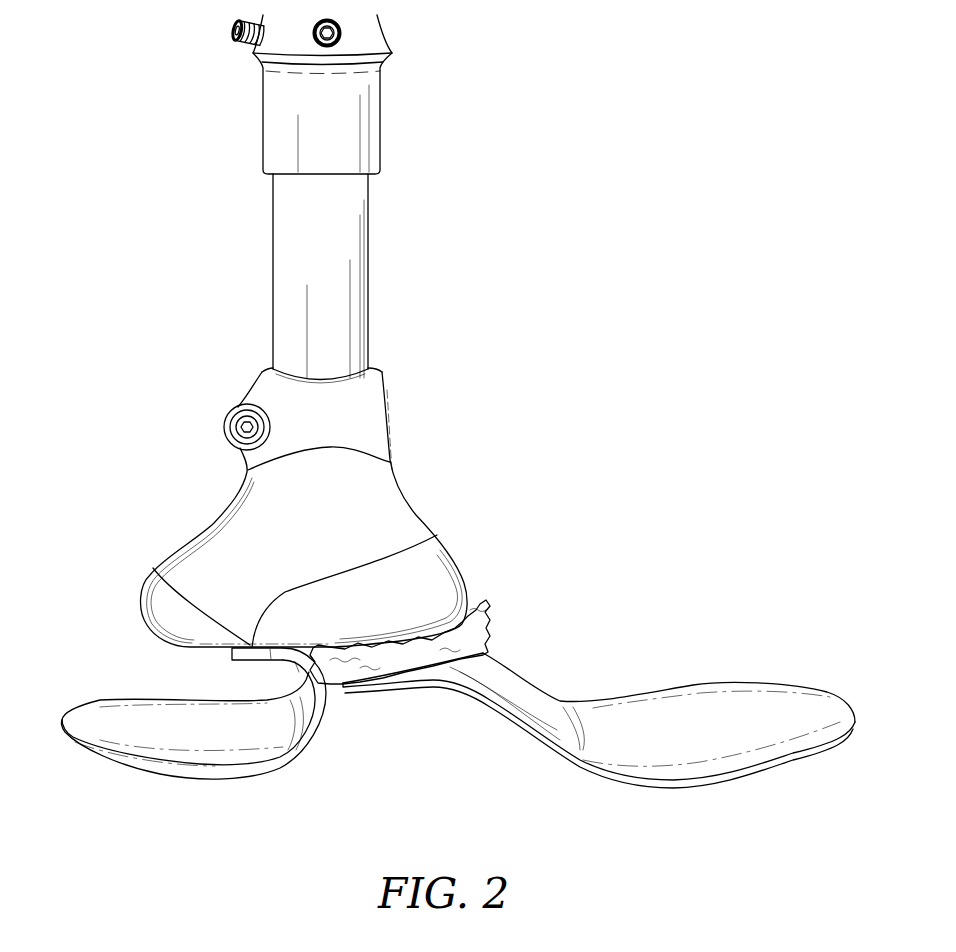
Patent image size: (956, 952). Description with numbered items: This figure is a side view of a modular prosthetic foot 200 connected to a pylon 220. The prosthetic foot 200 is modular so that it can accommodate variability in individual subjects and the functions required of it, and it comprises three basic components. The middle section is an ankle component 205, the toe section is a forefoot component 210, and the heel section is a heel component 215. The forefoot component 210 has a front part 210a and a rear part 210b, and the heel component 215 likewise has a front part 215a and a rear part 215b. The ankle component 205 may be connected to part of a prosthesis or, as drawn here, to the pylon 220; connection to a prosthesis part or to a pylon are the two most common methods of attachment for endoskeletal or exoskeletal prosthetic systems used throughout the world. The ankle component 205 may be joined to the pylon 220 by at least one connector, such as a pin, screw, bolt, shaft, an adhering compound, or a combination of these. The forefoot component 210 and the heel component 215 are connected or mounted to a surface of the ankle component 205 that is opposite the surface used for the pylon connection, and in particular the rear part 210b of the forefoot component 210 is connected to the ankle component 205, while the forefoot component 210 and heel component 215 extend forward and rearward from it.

The prosthetic foot 200 is at (458, 429).
The ankle component 205 is at (413, 533).
The forefoot component 210 is at (582, 720).
The front part of the forefoot component 210a is at (765, 772).
The rear part of the forefoot component 210b is at (383, 683).
The heel component 215 is at (193, 737).
The front part of the heel component 215a is at (230, 683).
The rear part of the heel component 215b is at (138, 774).
The pylon 220 is at (287, 285).